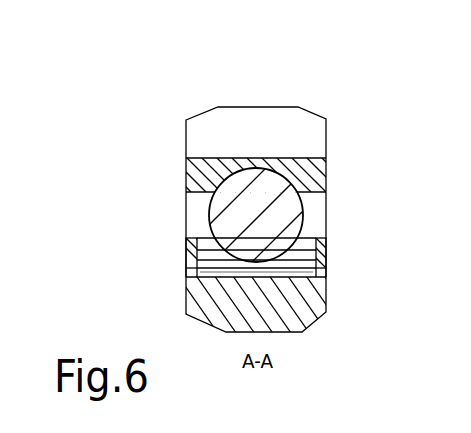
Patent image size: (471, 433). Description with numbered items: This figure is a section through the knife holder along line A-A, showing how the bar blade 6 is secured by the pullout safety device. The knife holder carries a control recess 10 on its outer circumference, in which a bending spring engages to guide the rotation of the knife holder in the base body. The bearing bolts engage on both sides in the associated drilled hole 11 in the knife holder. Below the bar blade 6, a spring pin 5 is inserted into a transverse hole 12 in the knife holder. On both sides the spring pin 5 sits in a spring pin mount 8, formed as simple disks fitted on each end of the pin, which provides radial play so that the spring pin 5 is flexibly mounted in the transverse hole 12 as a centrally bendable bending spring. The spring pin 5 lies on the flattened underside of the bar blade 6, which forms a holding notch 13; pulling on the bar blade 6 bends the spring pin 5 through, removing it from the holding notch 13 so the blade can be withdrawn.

The control recess 10 is at (307, 132).
The drilled hole 11 is at (197, 208).
The bar blade 6 is at (265, 210).
The holding notch 13 is at (211, 233).
The spring pin mount 8 is at (318, 247).
The spring pin 5 is at (303, 264).
The transverse hole 12 is at (215, 272).